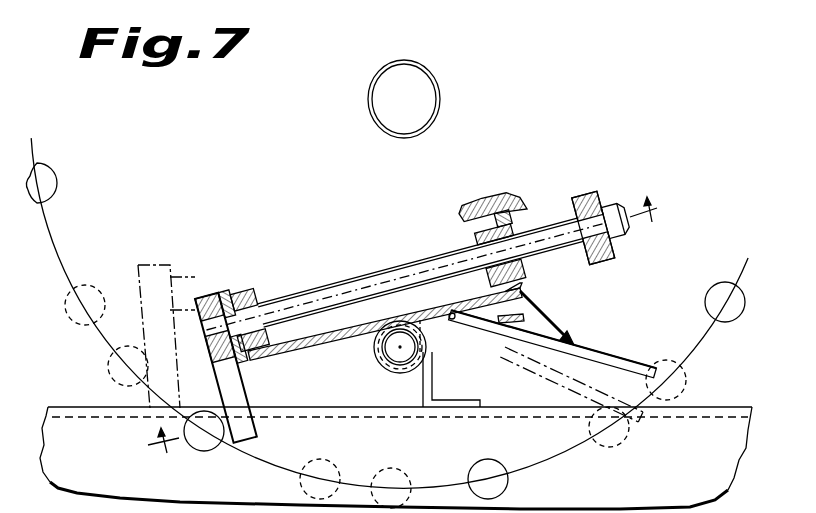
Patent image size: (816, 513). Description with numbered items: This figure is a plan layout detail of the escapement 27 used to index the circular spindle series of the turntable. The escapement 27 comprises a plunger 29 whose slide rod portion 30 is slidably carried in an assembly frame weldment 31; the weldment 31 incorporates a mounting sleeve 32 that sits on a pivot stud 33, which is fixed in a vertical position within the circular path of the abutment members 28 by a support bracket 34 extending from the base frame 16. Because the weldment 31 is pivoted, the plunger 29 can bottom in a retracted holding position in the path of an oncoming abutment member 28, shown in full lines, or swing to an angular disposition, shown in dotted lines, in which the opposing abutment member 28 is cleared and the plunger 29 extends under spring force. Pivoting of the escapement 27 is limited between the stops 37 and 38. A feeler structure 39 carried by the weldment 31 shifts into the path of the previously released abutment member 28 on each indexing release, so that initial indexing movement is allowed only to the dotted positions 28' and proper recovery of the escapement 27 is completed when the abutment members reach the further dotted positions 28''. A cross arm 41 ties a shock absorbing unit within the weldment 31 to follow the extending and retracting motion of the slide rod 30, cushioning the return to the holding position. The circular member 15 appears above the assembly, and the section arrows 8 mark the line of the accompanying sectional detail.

The section line 8- 8 is at (400, 329).
The ball 15 is at (369, 96).
The base frame 16 is at (729, 406).
The escapement 27 is at (609, 191).
The abutment members 28 is at (385, 331).
The dotted line abutment member positions 28' is at (368, 383).
The further dotted line abutment member positions 28'' is at (403, 429).
The plunger 29 is at (252, 373).
The slide rod portion 30 is at (326, 284).
The assembly frame weldment 31 is at (340, 349).
The mounting sleeve 32 is at (393, 376).
The pivot stud 33 is at (405, 347).
The support bracket 34 is at (436, 379).
The stop 37 is at (515, 198).
The stop 38 is at (543, 312).
The feeler structure 39 is at (618, 353).
The cross arm 41 is at (603, 257).